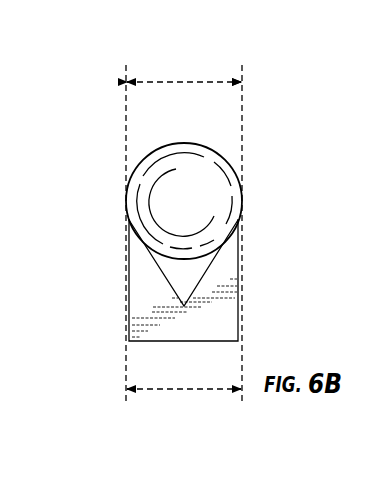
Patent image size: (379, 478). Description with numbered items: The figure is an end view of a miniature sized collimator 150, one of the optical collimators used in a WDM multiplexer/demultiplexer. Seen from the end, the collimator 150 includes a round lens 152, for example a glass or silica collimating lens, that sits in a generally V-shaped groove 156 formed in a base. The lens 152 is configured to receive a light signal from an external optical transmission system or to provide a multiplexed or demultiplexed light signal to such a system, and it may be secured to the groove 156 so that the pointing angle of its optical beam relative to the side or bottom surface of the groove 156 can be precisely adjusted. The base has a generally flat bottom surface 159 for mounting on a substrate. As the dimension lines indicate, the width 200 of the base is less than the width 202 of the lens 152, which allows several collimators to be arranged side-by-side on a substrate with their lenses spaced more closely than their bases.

The collimator 150 is at (126, 113).
The lens 152 is at (233, 158).
The groove 156 is at (171, 290).
The flat bottom surface 159 is at (148, 343).
The width 200 is at (177, 391).
The width 202 is at (180, 80).